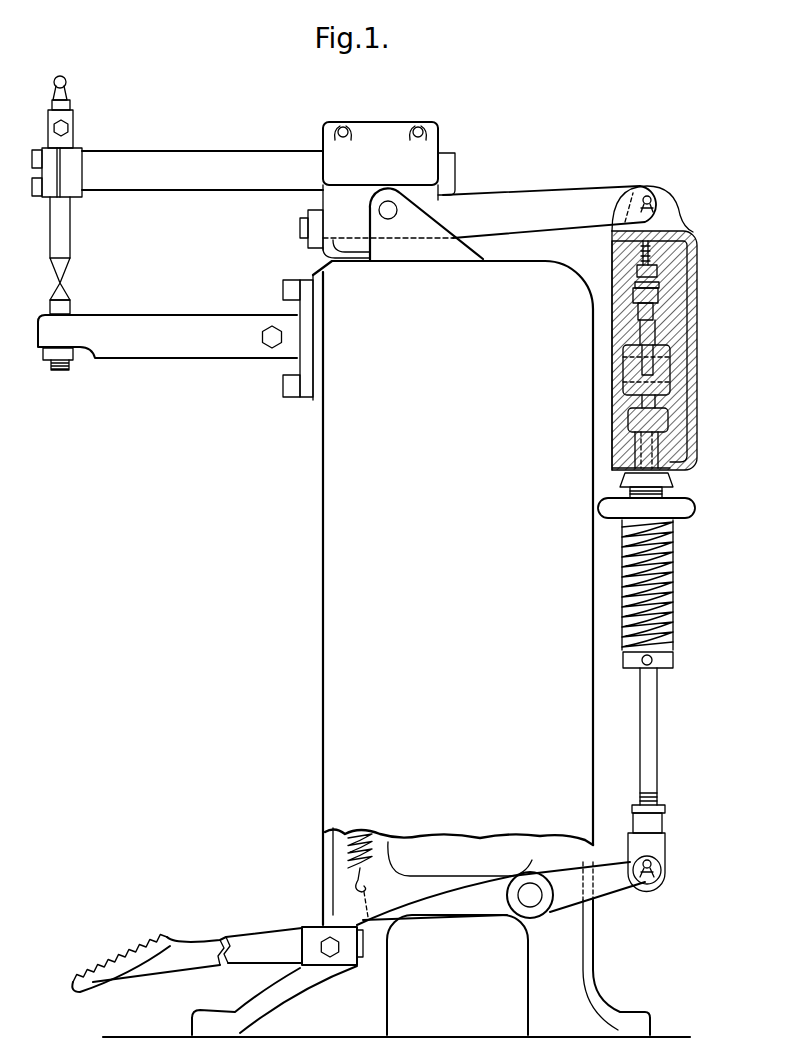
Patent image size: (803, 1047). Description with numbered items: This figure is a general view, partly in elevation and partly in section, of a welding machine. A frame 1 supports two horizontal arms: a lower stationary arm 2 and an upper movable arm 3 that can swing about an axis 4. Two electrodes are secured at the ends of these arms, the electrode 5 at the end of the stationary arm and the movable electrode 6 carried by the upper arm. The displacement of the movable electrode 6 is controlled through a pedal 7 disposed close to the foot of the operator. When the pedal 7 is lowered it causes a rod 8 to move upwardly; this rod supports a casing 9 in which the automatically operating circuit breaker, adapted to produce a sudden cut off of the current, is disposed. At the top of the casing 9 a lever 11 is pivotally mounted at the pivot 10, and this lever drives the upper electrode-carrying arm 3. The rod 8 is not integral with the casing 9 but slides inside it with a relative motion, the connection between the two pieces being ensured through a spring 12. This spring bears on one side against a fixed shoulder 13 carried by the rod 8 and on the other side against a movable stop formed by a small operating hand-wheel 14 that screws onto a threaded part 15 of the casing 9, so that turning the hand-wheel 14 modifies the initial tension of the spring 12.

The frame 1 is at (580, 1008).
The stationary arm 2 is at (175, 338).
The movable arm 3 is at (202, 187).
The axis 4 is at (392, 211).
The electrode 5 is at (60, 307).
The movable electrode 6 is at (62, 264).
The pedal 7 is at (358, 927).
The rod 8 is at (625, 589).
The casing 9 is at (690, 385).
The pivot 10 is at (643, 200).
The lever 11 is at (587, 215).
The spring 12 is at (622, 633).
The fixed shoulder 13 is at (662, 662).
The operating hand-wheel 14 is at (683, 510).
The threaded part 15 is at (632, 492).